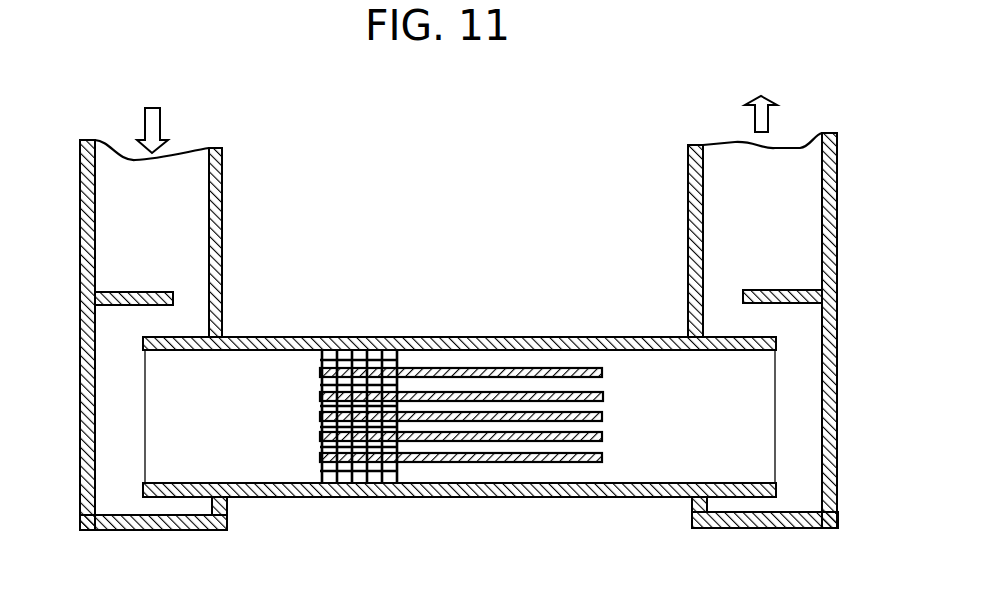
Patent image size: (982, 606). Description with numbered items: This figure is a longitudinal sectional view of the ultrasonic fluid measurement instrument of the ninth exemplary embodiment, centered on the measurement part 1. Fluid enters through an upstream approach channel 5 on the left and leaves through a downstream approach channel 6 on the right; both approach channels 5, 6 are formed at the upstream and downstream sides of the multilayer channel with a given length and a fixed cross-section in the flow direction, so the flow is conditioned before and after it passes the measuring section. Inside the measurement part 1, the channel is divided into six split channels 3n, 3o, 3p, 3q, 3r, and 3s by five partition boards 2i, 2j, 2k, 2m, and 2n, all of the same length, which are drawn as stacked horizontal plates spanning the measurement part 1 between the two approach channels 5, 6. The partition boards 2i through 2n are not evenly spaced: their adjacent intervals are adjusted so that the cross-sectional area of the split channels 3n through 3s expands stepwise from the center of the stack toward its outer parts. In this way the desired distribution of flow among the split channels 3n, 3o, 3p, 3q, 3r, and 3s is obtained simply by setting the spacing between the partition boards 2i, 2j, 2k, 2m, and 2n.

The measurement part 1 is at (510, 334).
The partition board 2i is at (320, 372).
The partition board 2j is at (320, 396).
The partition board 2k is at (320, 416).
The partition board 2m is at (320, 436).
The partition board 2n is at (320, 458).
The split channel 3n is at (595, 361).
The split channel 3o is at (596, 386).
The split channel 3p is at (598, 407).
The split channel 3q is at (598, 425).
The split channel 3r is at (595, 447).
The split channel 3s is at (595, 473).
The approach channel 5 is at (192, 458).
The approach channel 6 is at (723, 457).